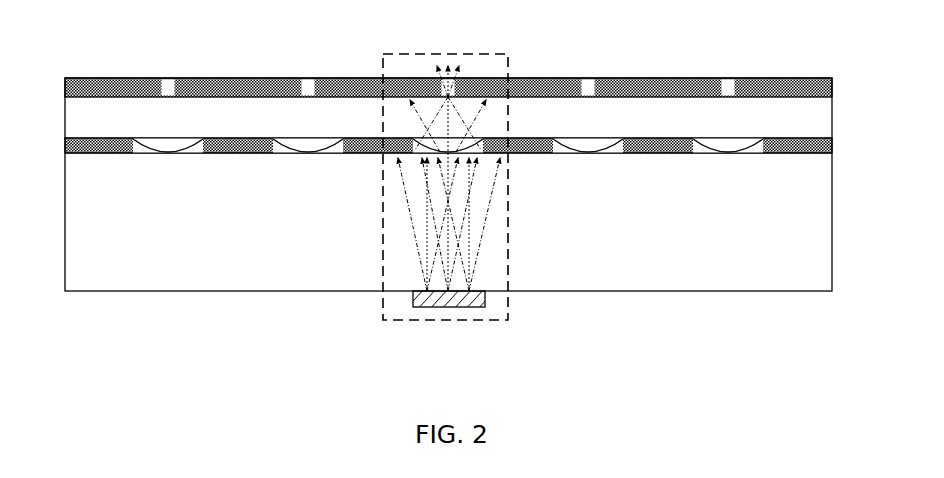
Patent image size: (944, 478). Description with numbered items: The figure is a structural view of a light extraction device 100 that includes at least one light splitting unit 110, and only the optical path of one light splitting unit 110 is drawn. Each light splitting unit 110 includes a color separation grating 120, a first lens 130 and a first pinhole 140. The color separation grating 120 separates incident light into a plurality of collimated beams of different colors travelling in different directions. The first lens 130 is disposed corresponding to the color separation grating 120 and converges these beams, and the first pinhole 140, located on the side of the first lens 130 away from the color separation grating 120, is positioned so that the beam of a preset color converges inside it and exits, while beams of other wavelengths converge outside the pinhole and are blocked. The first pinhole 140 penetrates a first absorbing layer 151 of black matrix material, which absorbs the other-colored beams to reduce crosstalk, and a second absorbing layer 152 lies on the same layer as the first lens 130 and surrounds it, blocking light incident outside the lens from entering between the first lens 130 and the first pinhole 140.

The light extraction device 100 is at (474, 366).
The light splitting unit 110 is at (482, 161).
The color separation grating 120 is at (499, 314).
The first lens 130 is at (448, 79).
The first pinhole 140 is at (448, 51).
The first absorbing layer 151 is at (448, 52).
The second absorbing layer 152 is at (448, 239).